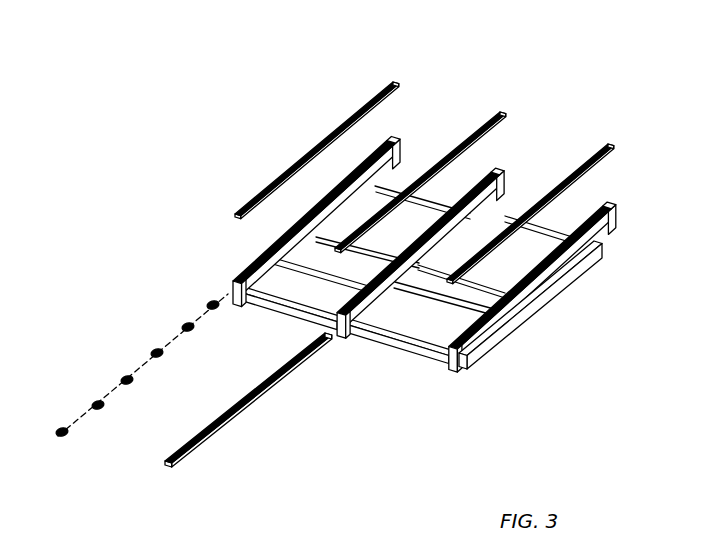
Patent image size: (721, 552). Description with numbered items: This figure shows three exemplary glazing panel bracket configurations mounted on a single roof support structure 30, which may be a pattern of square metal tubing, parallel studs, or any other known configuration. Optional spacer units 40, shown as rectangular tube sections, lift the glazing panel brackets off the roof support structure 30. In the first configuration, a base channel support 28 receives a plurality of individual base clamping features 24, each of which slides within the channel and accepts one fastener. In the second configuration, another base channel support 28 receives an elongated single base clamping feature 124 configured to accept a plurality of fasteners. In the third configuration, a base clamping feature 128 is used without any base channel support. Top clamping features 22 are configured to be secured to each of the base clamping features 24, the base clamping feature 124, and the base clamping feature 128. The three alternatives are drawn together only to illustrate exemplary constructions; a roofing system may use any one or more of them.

The top clamping feature 22 is at (386, 78).
The base clamping feature 24 is at (123, 378).
The base channel support 28 is at (247, 268).
The roof support structure 30 is at (526, 327).
The spacer unit 40 is at (399, 160).
The elongated single base clamping feature 124 is at (197, 455).
The base clamping feature 128 is at (480, 342).